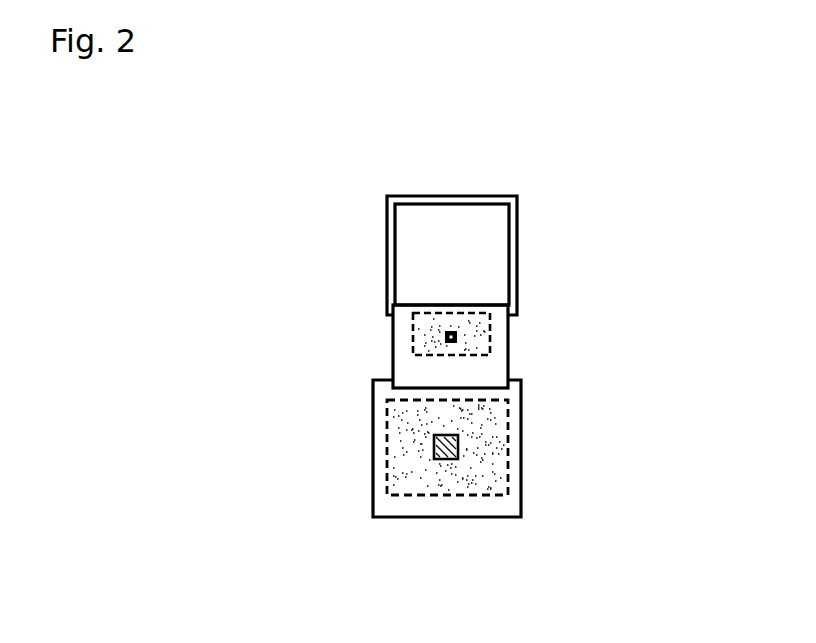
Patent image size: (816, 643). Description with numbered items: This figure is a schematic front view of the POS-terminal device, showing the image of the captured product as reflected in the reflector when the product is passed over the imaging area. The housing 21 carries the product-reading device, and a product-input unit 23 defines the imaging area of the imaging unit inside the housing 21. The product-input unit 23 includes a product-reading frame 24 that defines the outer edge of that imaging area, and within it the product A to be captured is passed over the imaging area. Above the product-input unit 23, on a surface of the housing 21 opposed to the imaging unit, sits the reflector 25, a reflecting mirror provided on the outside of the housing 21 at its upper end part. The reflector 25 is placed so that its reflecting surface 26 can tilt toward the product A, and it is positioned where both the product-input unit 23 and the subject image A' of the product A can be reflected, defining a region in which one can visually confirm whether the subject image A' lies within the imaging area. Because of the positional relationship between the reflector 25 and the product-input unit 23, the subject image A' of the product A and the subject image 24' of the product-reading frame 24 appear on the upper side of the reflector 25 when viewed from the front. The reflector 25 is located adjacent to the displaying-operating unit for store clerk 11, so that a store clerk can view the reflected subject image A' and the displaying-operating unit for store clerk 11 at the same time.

The displaying-operating unit for store clerk 11 is at (498, 274).
The housing 21 is at (400, 518).
The product-input unit 23 is at (398, 430).
The product-reading frame 24 is at (397, 447).
The subject image of the product-reading frame 24' is at (566, 315).
The reflector 25 is at (392, 348).
The reflecting surface 26 is at (405, 368).
The product A is at (515, 424).
The subject image of the product A' is at (524, 349).